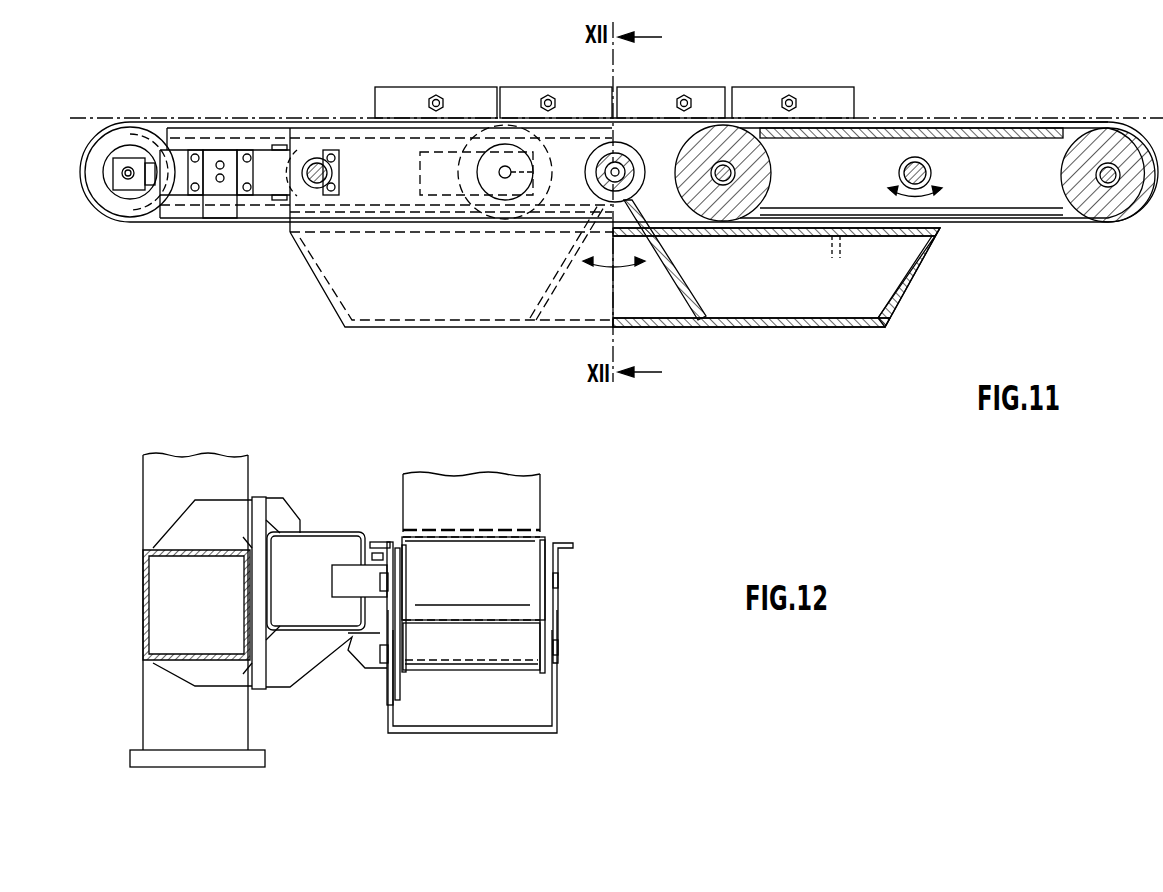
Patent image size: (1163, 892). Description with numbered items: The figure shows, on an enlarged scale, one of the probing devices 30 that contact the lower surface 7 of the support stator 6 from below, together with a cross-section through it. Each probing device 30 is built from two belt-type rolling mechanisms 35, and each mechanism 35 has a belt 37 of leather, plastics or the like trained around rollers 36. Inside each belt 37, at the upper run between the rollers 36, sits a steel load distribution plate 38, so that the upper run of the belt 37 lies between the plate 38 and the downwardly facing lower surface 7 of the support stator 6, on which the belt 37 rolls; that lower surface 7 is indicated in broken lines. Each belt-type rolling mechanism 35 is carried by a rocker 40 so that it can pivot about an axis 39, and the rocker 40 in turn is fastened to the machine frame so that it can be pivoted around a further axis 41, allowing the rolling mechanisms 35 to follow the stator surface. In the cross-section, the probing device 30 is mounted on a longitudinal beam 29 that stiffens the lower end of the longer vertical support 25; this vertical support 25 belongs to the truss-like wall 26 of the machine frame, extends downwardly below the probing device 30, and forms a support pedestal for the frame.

In FIG. 12, the support stator 6 is at (440, 490).
In FIG. 11, the lower surface 7 is at (873, 121).
In FIG. 12, the lower surface 7 is at (488, 526).
In FIG. 12, the vertical support 25 is at (151, 508).
In FIG. 12, the truss-like wall 26 is at (140, 546).
In FIG. 12, the longitudinal beam 29 is at (158, 628).
In FIG. 11, the probing device 30 is at (762, 83).
In FIG. 12, the probing device 30 is at (565, 628).
In FIG. 11, the belt-type rolling mechanism 35 is at (251, 228).
In FIG. 11, the roller 36 is at (703, 148).
In FIG. 11, the belt 37 is at (1083, 124).
In FIG. 11, the load distribution plate 38 is at (977, 128).
In FIG. 12, the load distribution plate 38 is at (528, 555).
In FIG. 11, the axis 39 is at (317, 188).
In FIG. 11, the rocker 40 is at (873, 300).
In FIG. 12, the rocker 40 is at (534, 683).
In FIG. 11, the axis 41 is at (603, 183).
In FIG. 12, the axis 41 is at (348, 578).